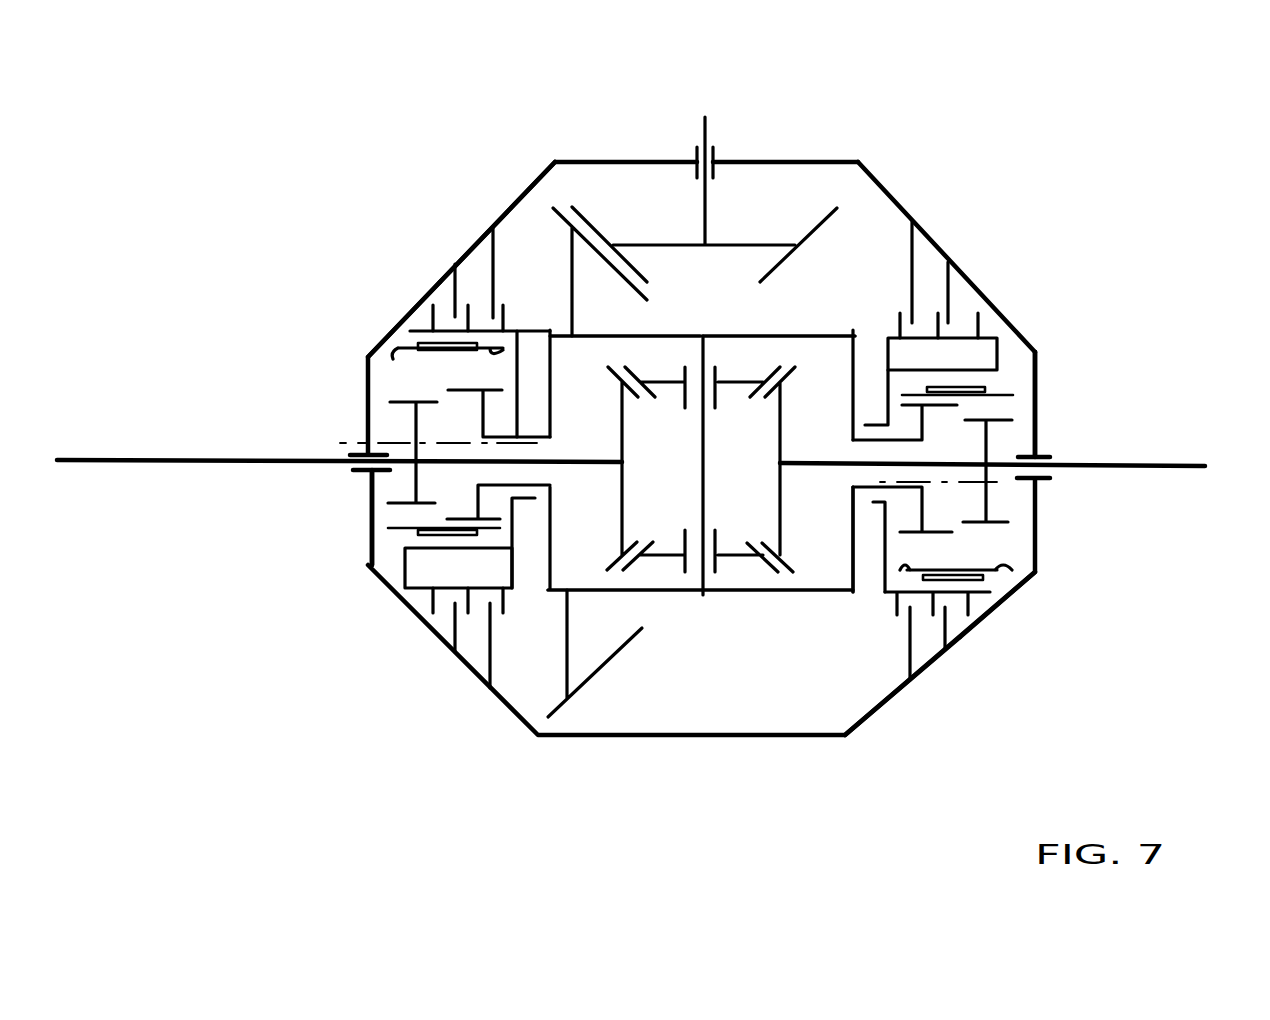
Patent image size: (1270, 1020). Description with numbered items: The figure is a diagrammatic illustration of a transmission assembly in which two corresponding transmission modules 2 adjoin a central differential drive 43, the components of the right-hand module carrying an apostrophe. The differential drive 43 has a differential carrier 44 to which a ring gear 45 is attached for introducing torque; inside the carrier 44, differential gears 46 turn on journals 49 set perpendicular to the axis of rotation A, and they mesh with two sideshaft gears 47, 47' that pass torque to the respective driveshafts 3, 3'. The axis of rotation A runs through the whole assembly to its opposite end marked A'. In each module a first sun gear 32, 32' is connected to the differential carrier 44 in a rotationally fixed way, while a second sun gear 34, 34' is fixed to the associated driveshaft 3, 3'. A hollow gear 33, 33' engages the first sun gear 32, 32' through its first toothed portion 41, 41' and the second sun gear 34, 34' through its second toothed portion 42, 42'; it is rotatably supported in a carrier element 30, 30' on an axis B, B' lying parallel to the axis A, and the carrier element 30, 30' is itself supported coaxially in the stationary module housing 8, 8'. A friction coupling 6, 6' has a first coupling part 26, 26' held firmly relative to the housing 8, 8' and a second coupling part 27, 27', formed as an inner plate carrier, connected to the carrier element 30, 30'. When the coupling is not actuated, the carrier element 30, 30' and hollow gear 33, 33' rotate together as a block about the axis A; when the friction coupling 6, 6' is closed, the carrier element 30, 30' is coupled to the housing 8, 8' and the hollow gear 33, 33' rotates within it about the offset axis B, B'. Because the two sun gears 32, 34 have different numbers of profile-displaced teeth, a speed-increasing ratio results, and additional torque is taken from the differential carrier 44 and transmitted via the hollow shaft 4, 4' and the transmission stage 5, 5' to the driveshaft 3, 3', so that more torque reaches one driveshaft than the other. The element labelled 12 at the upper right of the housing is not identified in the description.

The transmission module 2 is at (446, 185).
The housing section 12 is at (890, 133).
The driveshaft 3 is at (438, 475).
The driveshaft 3' is at (938, 449).
The hollow shaft 4 is at (688, 461).
The hollow shaft 4' is at (847, 539).
The transmission stage 5 is at (323, 517).
The transmission stage 5' is at (1084, 384).
The friction coupling 6 is at (436, 225).
The friction coupling 6' is at (960, 686).
The module housing 8 is at (570, 245).
The module housing 8' is at (823, 239).
The first coupling part 26 is at (468, 453).
The first coupling part 26' is at (937, 431).
The second coupling part 27 is at (426, 447).
The second coupling part 27' is at (991, 450).
The carrier element 30 is at (423, 496).
The carrier element 30' is at (972, 435).
The first sun gear 32 is at (489, 439).
The first sun gear 32' is at (881, 530).
The hollow gear 33 is at (392, 482).
The hollow gear 33' is at (998, 446).
The second sun gear 34 is at (379, 421).
The second sun gear 34' is at (1034, 447).
The first toothed portion 41 is at (534, 421).
The first toothed portion 41' is at (856, 533).
The second toothed portion 42 is at (381, 319).
The second toothed portion 42' is at (1030, 604).
The differential drive 43 is at (705, 616).
The differential carrier 44 is at (650, 336).
The ring gear 45 is at (590, 678).
The differential gears 46 is at (752, 352).
The sideshaft gear 47 is at (646, 469).
The sideshaft gear 47' is at (780, 469).
The journals 49 is at (706, 352).
The axis of rotation A is at (339, 424).
The axis end A' is at (1019, 433).
The axis B is at (355, 427).
The axis B' is at (1055, 485).